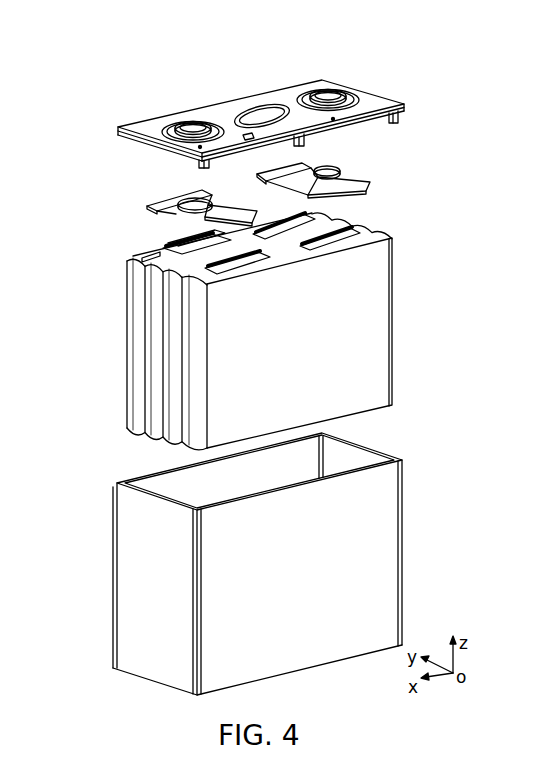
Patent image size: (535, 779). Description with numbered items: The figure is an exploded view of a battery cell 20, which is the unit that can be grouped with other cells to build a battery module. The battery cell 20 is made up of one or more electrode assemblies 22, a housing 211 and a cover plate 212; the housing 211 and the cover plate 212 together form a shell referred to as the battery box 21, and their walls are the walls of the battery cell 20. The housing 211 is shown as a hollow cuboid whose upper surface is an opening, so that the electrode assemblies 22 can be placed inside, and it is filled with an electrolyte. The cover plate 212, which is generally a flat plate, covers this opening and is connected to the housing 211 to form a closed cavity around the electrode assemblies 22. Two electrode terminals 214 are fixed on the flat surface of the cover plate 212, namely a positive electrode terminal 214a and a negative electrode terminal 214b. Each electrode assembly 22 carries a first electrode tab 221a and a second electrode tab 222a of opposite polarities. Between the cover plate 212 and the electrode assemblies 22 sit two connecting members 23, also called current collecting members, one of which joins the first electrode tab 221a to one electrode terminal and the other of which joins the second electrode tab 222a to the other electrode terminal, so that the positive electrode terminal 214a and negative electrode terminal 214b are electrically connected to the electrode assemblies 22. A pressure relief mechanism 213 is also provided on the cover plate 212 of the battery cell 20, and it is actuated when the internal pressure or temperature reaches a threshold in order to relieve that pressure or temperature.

The battery cell 20 is at (135, 39).
The battery box 21 is at (117, 483).
The housing 211 is at (365, 544).
The cover plate 212 is at (397, 113).
The pressure relief mechanism 213 is at (318, 126).
The electrode terminals 214 is at (304, 42).
The positive electrode terminal 214a is at (190, 127).
The negative electrode terminal 214b is at (327, 96).
The electrode assembly 22 is at (355, 331).
The first electrode tab 221a is at (160, 255).
The second electrode tab 222a is at (357, 235).
The connecting member 23 is at (148, 207).